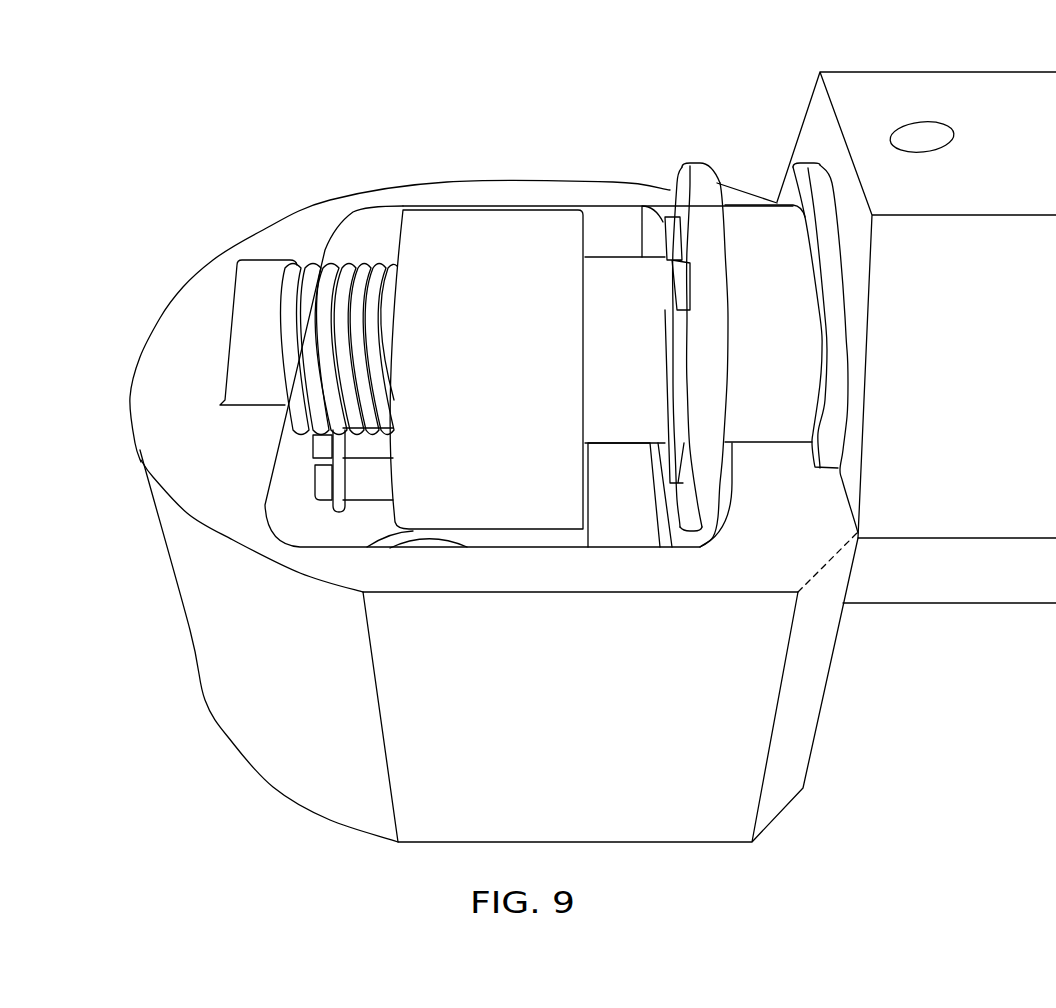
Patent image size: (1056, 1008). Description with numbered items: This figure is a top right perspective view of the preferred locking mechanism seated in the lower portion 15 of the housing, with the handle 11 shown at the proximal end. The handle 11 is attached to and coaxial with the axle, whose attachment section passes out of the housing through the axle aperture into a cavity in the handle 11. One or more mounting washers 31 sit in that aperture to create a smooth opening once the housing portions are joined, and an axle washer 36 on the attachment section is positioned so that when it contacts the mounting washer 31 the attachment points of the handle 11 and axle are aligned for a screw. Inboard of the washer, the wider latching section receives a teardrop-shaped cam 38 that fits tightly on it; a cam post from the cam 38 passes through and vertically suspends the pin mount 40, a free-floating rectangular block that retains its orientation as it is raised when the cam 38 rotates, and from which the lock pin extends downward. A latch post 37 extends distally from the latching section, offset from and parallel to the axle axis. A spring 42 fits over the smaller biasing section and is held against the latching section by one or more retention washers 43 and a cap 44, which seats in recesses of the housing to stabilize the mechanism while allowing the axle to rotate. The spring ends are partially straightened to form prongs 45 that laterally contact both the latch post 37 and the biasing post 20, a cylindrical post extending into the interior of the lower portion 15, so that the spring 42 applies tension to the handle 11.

The handle 11 is at (912, 72).
The lower portion 15 is at (153, 513).
The biasing post 20 is at (363, 503).
The mounting washer 31 is at (777, 202).
The axle washer 36 is at (665, 218).
The latch post 37 is at (313, 449).
The cam 38 is at (398, 210).
The pin mount 40 is at (590, 535).
The spring 42 is at (357, 264).
The retention washer 43 is at (312, 262).
The cap 44 is at (256, 260).
The prongs 45 is at (340, 510).